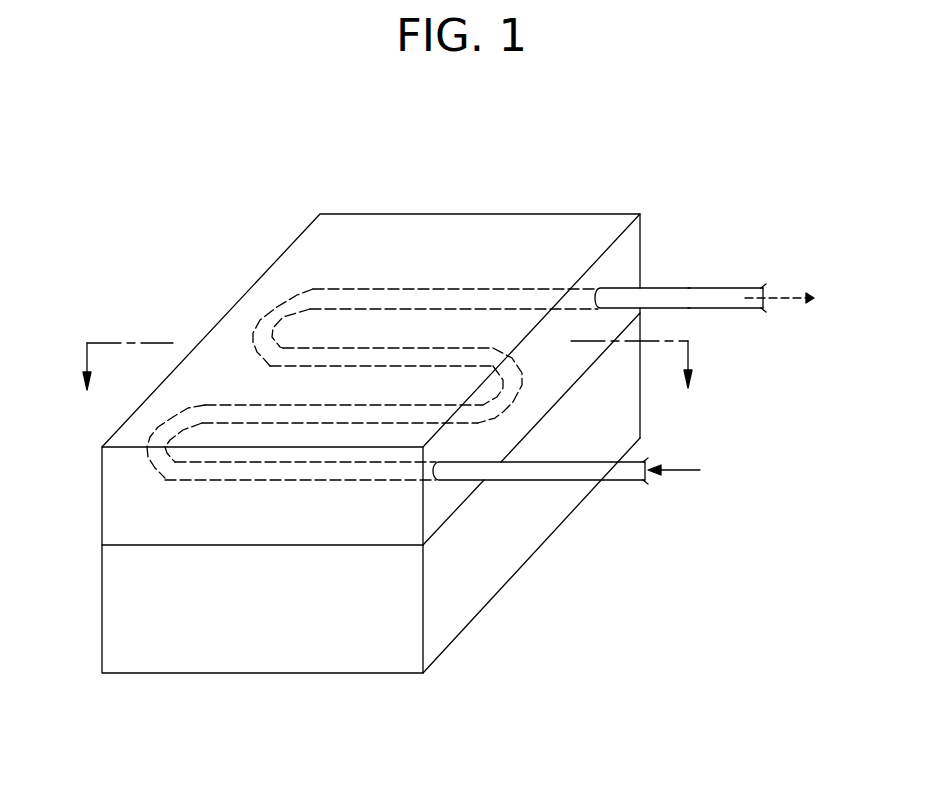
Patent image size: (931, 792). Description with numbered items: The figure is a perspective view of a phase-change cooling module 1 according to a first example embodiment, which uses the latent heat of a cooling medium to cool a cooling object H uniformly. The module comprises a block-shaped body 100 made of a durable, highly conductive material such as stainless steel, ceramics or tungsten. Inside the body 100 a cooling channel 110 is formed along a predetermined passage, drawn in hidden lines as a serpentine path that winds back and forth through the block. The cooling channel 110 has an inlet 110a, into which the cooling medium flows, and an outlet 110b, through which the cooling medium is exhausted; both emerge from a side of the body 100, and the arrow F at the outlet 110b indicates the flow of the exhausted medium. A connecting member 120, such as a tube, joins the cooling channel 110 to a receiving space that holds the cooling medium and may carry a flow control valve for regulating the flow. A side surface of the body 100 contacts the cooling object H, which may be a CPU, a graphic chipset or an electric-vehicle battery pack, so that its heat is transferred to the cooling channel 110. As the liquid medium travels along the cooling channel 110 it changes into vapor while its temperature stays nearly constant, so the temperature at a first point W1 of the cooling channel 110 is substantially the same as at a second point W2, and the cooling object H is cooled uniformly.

The phase-change cooling module 1 is at (763, 147).
The body 100 is at (571, 228).
The cooling channel 110 is at (277, 317).
The inlet 110a is at (597, 288).
The outlet 110b is at (435, 481).
The connecting member 120 is at (713, 302).
The fluid flow direction F is at (692, 471).
The cooling object H is at (463, 602).
The first point W1 is at (440, 297).
The second point W2 is at (312, 473).